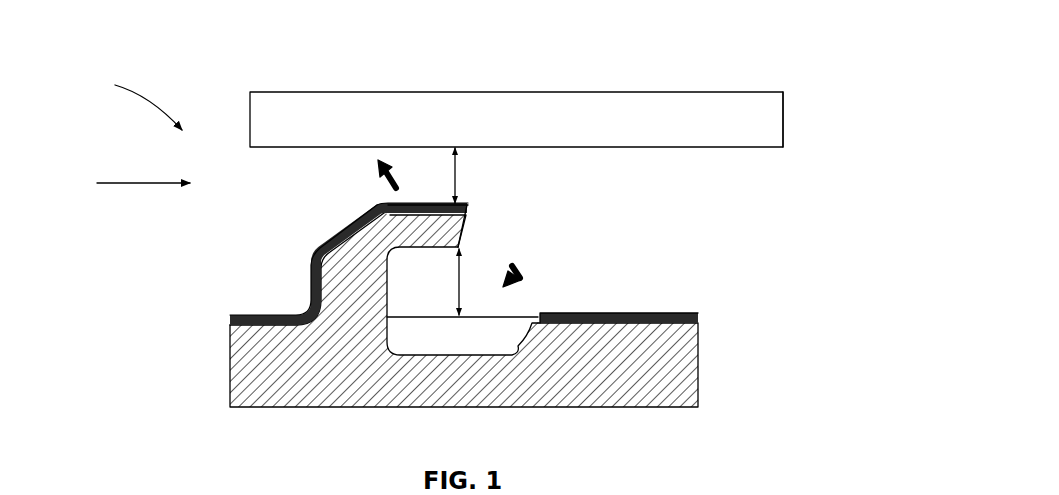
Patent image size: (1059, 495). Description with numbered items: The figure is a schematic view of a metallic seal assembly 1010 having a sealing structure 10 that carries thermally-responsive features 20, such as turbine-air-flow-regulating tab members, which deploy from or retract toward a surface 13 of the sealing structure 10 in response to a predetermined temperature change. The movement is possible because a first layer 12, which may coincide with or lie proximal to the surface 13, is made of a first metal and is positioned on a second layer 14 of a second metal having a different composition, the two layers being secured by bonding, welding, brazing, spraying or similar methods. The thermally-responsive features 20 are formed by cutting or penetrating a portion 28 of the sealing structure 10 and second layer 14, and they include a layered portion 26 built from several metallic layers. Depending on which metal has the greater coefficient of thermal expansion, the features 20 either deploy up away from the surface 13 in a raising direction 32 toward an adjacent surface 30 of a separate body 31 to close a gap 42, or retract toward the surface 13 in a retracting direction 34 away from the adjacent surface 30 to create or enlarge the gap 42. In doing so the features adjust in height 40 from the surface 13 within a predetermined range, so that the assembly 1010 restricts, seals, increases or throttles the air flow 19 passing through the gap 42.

The metallic seal assembly 1010 is at (118, 101).
The sealing structure 10 is at (690, 377).
The first layer 12 is at (532, 318).
The surface 13 is at (705, 318).
The second layer 14 is at (255, 314).
The air flow 19 is at (132, 182).
The thermally-responsive features 20 is at (487, 203).
The layered portion 26 is at (470, 203).
The portion 28 is at (467, 247).
The adjacent surface 30 is at (710, 147).
The separate body 31 is at (787, 106).
The raising direction 32 is at (392, 183).
The retracting direction 34 is at (516, 270).
The height 40 is at (459, 280).
The gap 42 is at (455, 170).